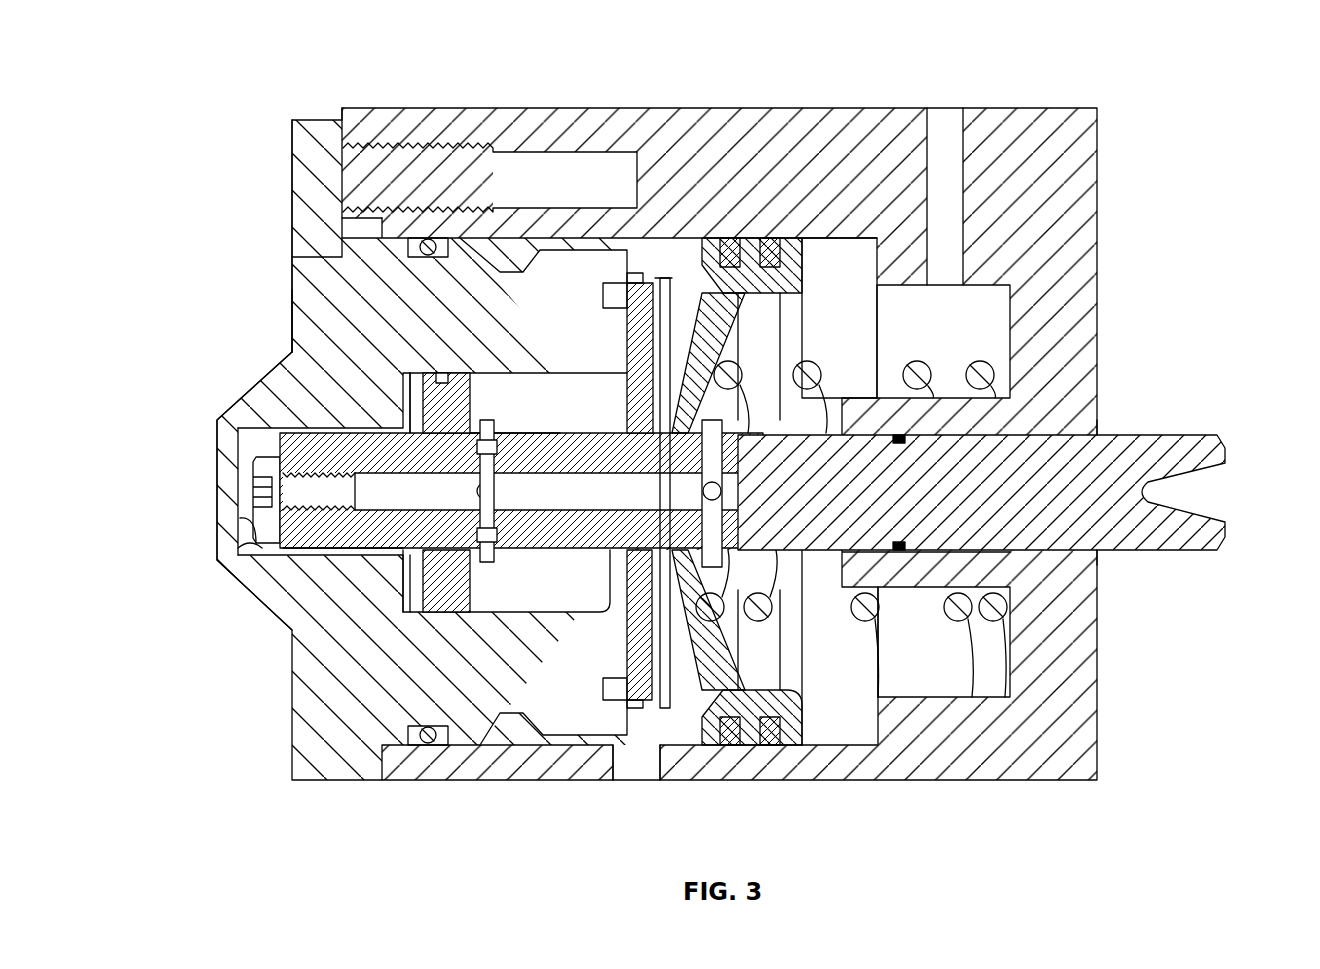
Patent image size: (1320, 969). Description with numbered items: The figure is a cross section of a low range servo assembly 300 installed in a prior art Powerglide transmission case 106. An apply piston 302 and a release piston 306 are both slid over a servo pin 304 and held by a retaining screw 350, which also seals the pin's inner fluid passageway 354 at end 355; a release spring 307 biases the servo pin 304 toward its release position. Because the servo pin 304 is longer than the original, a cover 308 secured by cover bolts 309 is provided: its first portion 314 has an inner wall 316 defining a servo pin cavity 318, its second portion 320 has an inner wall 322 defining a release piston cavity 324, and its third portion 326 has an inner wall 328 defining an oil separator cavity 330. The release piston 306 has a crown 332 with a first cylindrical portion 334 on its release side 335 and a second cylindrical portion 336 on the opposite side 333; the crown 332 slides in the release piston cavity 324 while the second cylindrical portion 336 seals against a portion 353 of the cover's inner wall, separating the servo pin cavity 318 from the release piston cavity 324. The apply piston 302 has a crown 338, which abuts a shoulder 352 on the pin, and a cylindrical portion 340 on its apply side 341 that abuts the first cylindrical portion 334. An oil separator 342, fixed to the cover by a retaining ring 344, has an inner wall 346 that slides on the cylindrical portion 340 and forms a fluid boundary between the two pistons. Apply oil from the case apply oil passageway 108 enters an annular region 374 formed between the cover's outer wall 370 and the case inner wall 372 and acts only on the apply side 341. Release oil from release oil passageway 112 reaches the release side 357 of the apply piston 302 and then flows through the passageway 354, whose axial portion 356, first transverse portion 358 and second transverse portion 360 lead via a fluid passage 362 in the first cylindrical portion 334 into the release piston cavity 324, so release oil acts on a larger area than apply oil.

The low range servo assembly 300 is at (1228, 90).
The apply piston 302 is at (758, 237).
The servo pin 304 is at (1128, 550).
The release piston 306 is at (441, 617).
The release spring 307 is at (962, 630).
The cover 308 is at (302, 310).
The cover bolts 309 is at (292, 192).
The transmission case 106 is at (417, 108).
The case apply oil passageway 108 is at (643, 780).
The release oil passageway 112 is at (948, 126).
The first portion 314 is at (273, 578).
The inner wall 316 is at (255, 545).
The servo pin cavity 318 is at (255, 452).
The second portion 320 is at (497, 638).
The inner wall 322 is at (537, 612).
The release piston cavity 324 is at (560, 392).
The third portion 326 is at (655, 237).
The inner wall 328 is at (617, 710).
The oil separator cavity 330 is at (682, 267).
The crown 332 is at (437, 372).
The opposite side 333 is at (330, 335).
The first cylindrical portion 334 is at (513, 432).
The release side 335 is at (467, 405).
The second cylindrical portion 336 is at (392, 387).
The crown 338 is at (790, 253).
The cylindrical portion 340 is at (542, 540).
The apply side 341 is at (687, 717).
The oil separator 342 is at (668, 358).
The retaining ring 344 is at (662, 710).
The inner wall 346 is at (618, 545).
The retaining screw 350 is at (255, 520).
The shoulder 352 is at (683, 375).
The portion of the inner wall 353 is at (362, 552).
The inner fluid passageway 354 is at (780, 500).
The end 355 is at (237, 452).
The axial portion 356 is at (688, 506).
The release side 357 is at (713, 672).
The first transverse portion 358 is at (728, 433).
The second transverse portion 360 is at (467, 478).
The fluid passage 362 is at (485, 560).
The outer wall 370 is at (515, 750).
The inner wall 372 is at (497, 242).
The annular region 374 is at (502, 733).